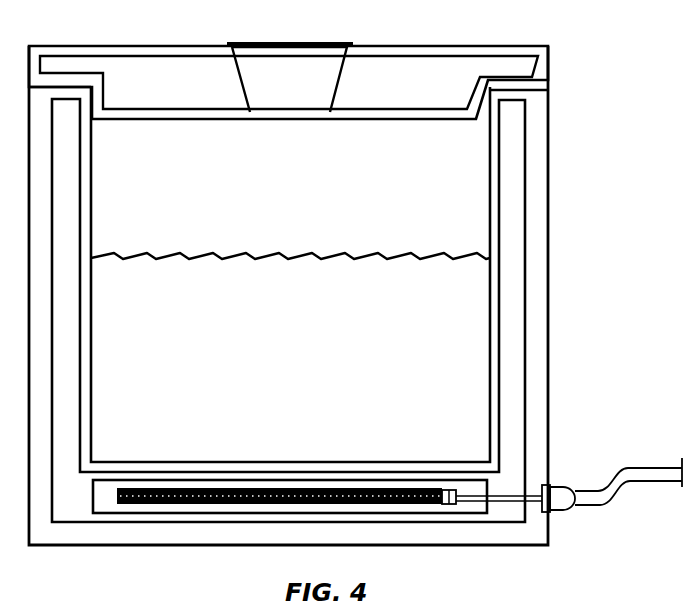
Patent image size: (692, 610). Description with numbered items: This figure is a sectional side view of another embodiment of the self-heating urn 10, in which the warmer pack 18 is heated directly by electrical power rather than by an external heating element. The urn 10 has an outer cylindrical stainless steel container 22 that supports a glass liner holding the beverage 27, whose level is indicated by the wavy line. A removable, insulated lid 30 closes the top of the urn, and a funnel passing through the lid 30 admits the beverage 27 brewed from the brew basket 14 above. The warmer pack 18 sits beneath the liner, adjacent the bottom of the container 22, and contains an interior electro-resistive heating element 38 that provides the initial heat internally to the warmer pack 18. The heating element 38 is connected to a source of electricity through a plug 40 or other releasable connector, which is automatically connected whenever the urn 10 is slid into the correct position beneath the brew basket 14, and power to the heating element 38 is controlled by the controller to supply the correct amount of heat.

The urn 10 is at (549, 177).
The brew basket 14 is at (336, 43).
The warmer pack 18 is at (452, 505).
The stainless steel container 22 is at (538, 352).
The beverage 27 is at (489, 257).
The insulated lid 30 is at (540, 80).
The interior heating element 38 is at (252, 513).
The plug 40 is at (565, 512).